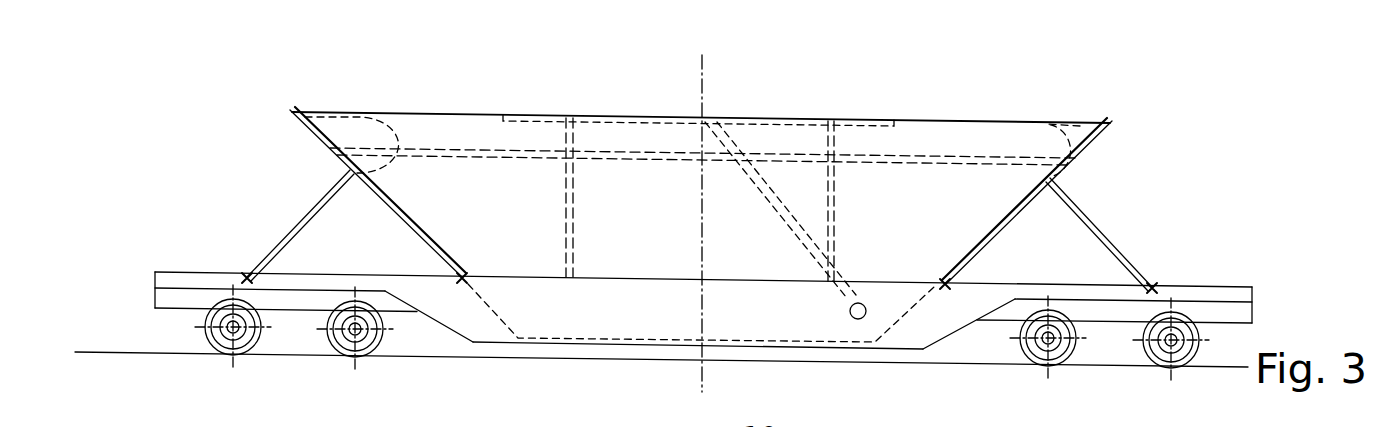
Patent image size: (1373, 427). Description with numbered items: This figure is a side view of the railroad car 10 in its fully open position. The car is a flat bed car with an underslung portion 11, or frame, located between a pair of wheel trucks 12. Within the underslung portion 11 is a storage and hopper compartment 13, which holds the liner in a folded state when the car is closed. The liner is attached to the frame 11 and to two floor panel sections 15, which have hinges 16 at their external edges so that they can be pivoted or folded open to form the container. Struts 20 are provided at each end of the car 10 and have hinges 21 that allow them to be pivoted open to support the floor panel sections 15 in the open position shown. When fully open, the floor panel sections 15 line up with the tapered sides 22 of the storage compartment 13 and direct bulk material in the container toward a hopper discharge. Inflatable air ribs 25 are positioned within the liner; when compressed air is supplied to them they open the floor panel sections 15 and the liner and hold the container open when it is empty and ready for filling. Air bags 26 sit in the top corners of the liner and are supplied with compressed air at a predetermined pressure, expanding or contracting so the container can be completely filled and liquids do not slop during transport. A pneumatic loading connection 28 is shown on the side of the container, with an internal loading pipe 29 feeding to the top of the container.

The railroad car 10 is at (737, 106).
The underslung portion 11 is at (472, 349).
The wheel trucks 12 is at (245, 346).
The storage and hopper compartment 13 is at (618, 325).
The floor panel sections 15 is at (382, 210).
The hinges 16 is at (464, 277).
The struts 20 is at (297, 222).
The hinges 21 is at (246, 278).
The tapered sides 22 is at (493, 302).
The inflatable air ribs 25 is at (522, 152).
The air bags 26 is at (351, 132).
The pneumatic loading connection 28 is at (850, 312).
The internal loading pipe 29 is at (785, 228).